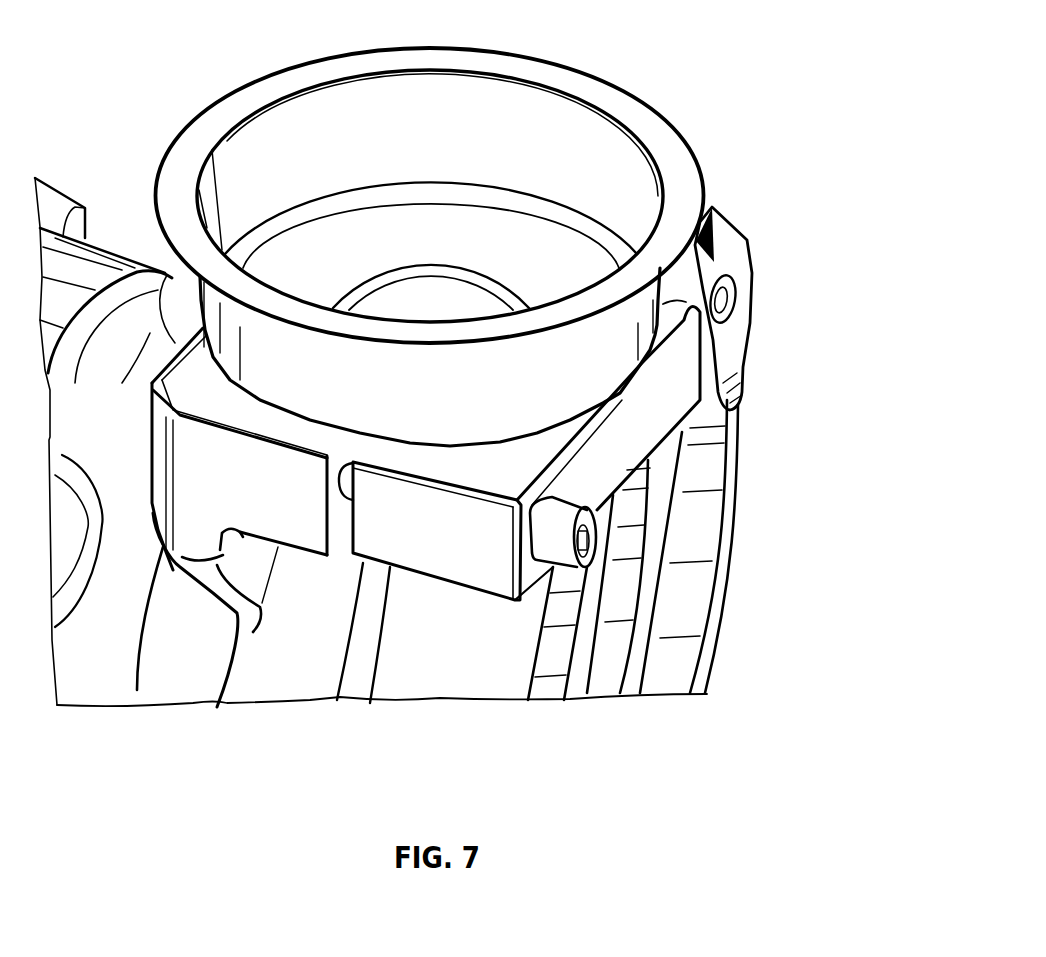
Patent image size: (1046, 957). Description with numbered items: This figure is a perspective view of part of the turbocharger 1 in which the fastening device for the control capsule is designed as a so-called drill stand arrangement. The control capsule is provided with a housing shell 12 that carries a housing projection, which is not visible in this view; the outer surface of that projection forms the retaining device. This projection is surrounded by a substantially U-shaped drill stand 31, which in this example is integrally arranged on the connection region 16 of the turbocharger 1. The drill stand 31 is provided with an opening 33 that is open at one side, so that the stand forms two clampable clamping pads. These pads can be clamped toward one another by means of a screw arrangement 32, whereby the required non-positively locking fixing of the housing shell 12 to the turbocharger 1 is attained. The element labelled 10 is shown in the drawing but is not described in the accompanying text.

The turbocharger 1 is at (108, 188).
The housing shell 12 is at (666, 107).
The drill stand 31 is at (640, 445).
The screw arrangement 32 is at (558, 553).
The opening 33 is at (345, 543).
The housing support 10 is at (296, 596).
The connection region 16 is at (313, 685).